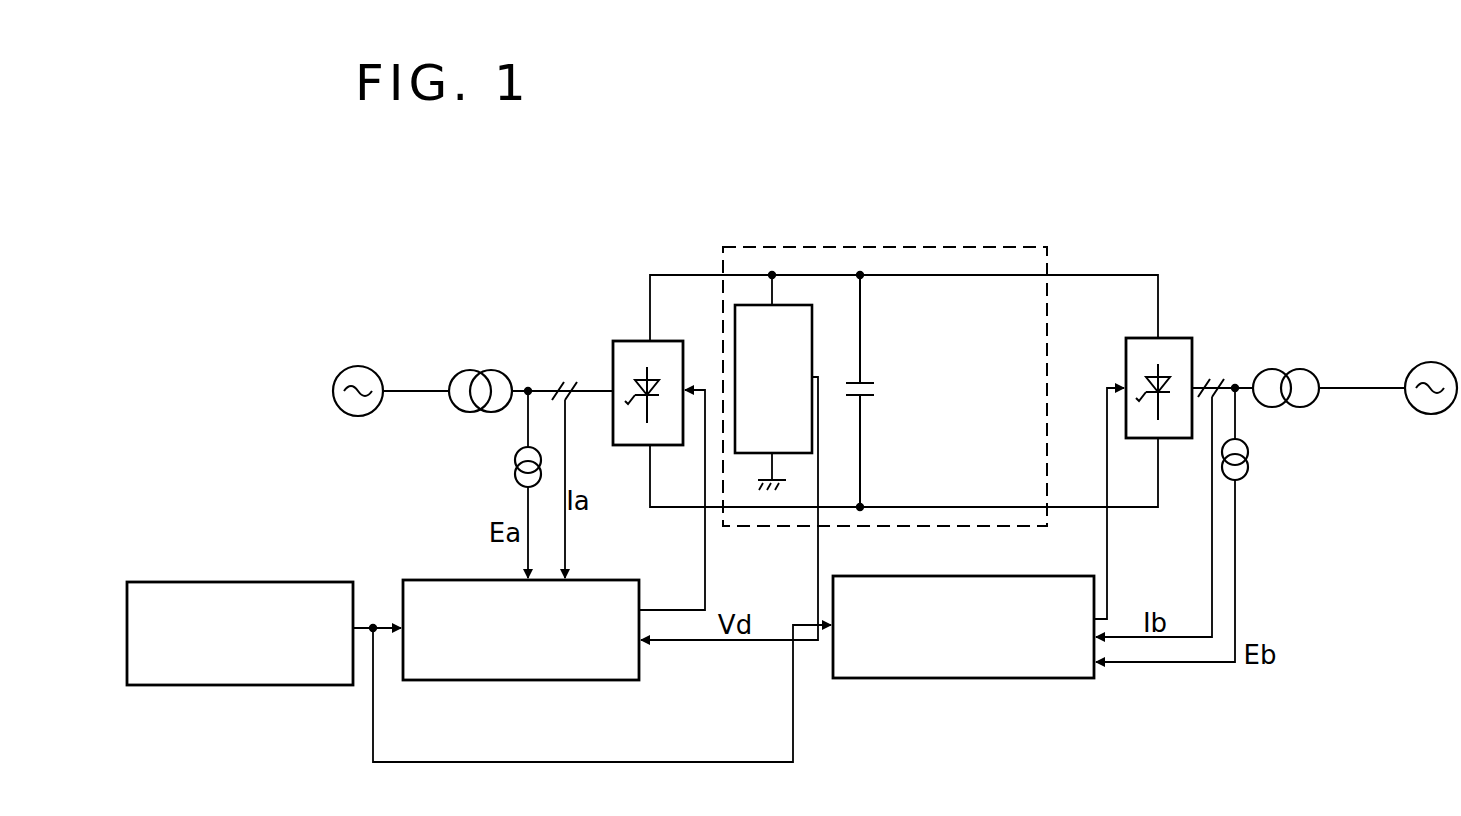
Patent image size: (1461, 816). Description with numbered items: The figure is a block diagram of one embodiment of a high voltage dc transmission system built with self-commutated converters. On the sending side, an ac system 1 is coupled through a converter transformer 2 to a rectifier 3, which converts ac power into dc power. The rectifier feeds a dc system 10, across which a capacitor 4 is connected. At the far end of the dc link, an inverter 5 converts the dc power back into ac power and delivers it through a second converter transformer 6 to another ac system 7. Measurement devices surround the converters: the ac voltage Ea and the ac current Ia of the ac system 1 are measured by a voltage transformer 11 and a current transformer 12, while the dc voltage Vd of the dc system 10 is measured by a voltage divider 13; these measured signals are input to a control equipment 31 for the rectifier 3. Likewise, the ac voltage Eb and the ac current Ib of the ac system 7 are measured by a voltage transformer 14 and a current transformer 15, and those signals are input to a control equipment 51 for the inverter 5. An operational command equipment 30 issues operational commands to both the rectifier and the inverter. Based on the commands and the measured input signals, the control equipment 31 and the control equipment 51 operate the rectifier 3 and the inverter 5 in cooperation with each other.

The ac system 1 is at (375, 366).
The converter transformer 2 is at (486, 368).
The rectifier 3 is at (632, 344).
The capacitor 4 is at (876, 386).
The inverter 5 is at (1183, 327).
The converter transformer 6 is at (1296, 369).
The ac system 7 is at (1431, 362).
The dc system 10 is at (1050, 261).
The voltage transformer 11 is at (515, 472).
The current transformer 12 is at (570, 382).
The voltage divider 13 is at (810, 318).
The voltage transformer 14 is at (1248, 464).
The current transformer 15 is at (1212, 376).
The operational command equipment 30 is at (330, 579).
The control equipment for the rectifier 31 is at (614, 579).
The control equipment for the inverter 51 is at (994, 578).